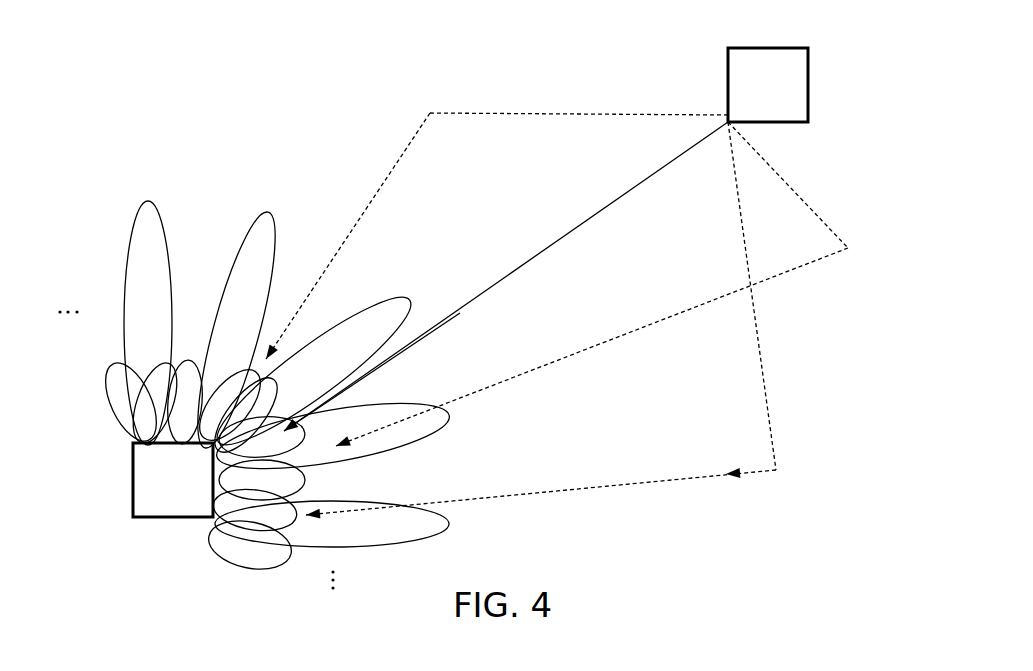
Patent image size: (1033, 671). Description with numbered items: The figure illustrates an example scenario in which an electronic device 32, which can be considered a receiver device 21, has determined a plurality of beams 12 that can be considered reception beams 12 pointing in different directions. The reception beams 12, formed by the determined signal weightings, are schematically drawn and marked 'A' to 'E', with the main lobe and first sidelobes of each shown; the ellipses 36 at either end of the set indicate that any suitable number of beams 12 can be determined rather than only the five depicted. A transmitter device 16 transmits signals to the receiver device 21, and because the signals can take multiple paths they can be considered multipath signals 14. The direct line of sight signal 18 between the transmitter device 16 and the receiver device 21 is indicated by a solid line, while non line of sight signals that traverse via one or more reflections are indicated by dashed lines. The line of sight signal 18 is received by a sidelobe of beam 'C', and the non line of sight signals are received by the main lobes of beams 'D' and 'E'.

The beams 12 is at (190, 197).
The multipath signals 14 is at (743, 472).
The transmitter device 16 is at (755, 47).
The line of sight signal 18 is at (517, 268).
The receiver device 21 is at (133, 507).
The electronic device 32 is at (133, 507).
The ellipses 36 is at (68, 297).